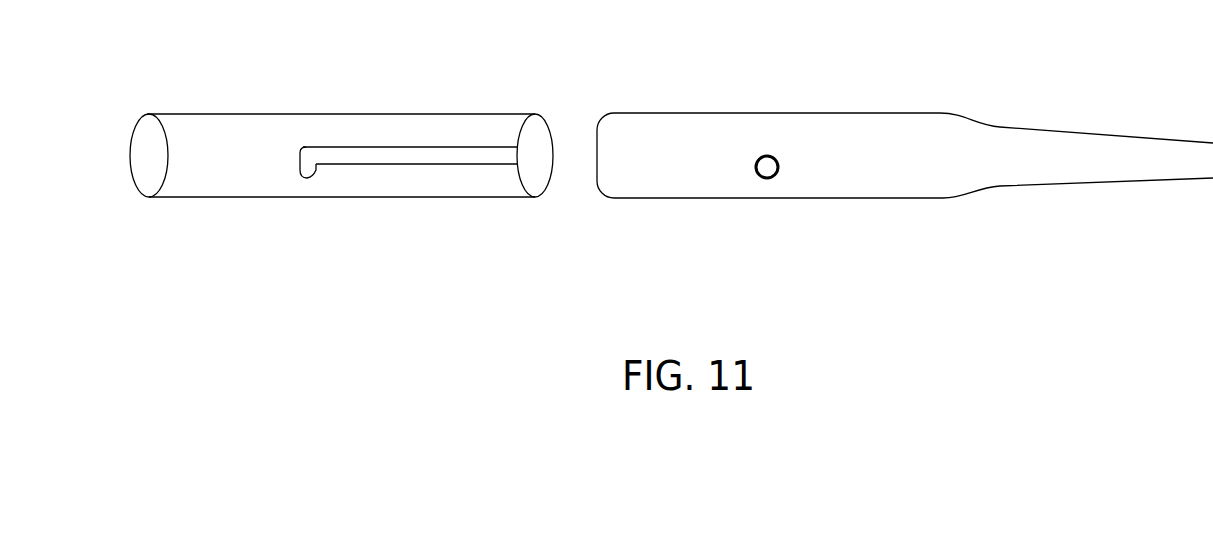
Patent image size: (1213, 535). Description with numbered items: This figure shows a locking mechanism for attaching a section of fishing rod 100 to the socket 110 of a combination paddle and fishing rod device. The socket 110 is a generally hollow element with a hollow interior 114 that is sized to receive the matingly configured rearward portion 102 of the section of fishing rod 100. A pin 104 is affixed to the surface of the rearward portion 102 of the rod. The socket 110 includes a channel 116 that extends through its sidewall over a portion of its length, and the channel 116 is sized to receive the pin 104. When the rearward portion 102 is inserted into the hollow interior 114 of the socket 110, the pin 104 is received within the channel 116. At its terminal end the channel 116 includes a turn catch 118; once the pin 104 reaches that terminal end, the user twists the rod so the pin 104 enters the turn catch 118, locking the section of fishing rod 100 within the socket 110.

The section of fishing rod 100 is at (1151, 190).
The rearward portion 102 is at (692, 205).
The pin 104 is at (780, 140).
The socket 110 is at (286, 205).
The hollow interior 114 is at (539, 161).
The channel 116 is at (418, 160).
The turn catch 118 is at (311, 152).